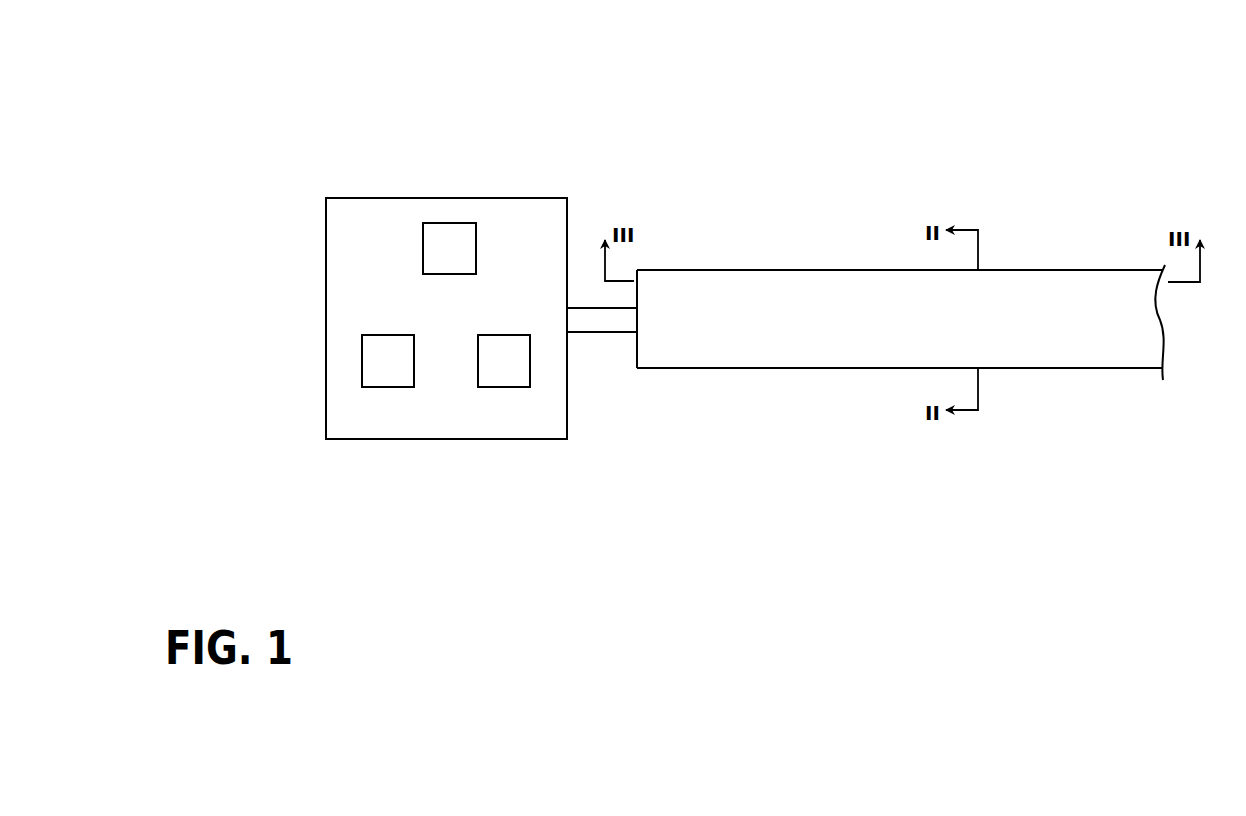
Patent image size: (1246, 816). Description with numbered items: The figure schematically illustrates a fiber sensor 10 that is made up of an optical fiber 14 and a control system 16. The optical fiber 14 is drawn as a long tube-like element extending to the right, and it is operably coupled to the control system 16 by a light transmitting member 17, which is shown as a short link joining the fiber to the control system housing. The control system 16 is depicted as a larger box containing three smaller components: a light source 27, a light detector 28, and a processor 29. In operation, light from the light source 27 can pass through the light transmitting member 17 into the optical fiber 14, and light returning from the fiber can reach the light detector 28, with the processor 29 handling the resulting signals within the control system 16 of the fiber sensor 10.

The fiber sensor 10 is at (394, 152).
The optical fiber 14 is at (850, 267).
The control system 16 is at (432, 442).
The light transmitting member 17 is at (602, 335).
The light source 27 is at (449, 237).
The light detector 28 is at (377, 338).
The processor 29 is at (503, 377).